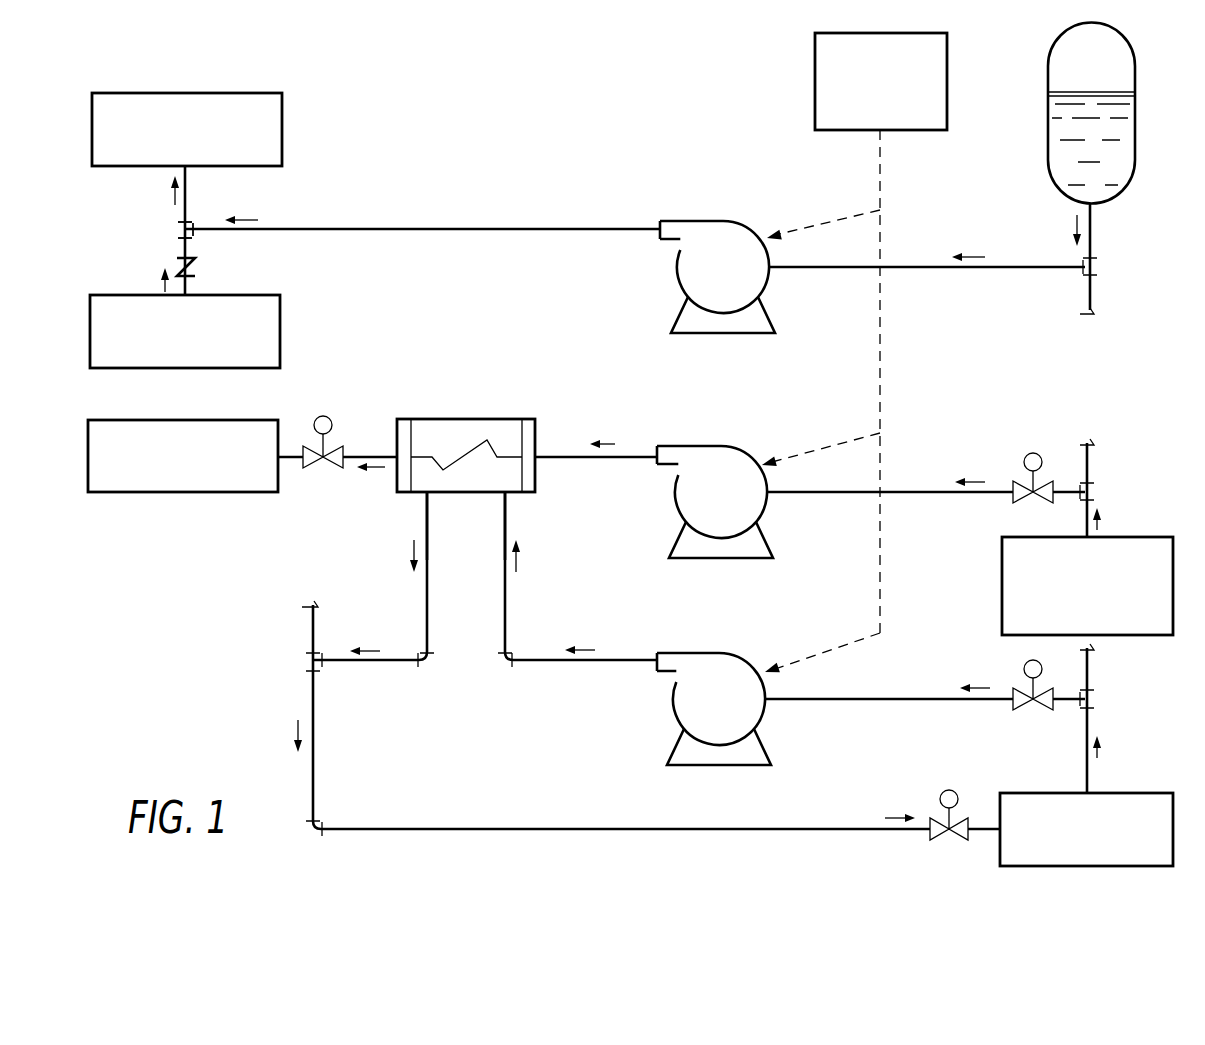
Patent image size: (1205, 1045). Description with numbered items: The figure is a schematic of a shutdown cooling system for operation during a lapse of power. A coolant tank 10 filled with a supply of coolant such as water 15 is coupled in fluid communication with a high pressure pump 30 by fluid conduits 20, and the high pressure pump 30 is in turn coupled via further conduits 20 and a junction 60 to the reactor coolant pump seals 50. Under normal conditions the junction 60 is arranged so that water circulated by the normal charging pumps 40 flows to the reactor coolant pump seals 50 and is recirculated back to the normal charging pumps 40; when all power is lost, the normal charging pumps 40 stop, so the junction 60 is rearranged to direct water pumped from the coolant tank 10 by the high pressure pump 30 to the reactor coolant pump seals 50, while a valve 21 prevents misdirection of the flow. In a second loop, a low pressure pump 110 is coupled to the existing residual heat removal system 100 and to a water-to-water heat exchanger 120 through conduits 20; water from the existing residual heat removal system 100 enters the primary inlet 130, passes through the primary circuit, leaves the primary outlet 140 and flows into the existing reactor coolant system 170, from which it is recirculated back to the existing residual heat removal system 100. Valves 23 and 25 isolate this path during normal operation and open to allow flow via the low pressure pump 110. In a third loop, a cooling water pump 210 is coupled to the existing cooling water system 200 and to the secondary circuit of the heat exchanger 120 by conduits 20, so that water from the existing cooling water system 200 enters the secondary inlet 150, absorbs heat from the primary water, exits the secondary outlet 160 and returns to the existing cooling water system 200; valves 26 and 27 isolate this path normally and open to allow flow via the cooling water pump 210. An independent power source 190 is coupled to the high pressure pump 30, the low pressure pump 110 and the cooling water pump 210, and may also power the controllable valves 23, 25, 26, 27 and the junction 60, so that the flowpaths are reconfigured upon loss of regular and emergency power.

The coolant tank 10 is at (1058, 38).
The water 15 is at (1075, 134).
The fluid conduits 20 is at (397, 231).
The valve 21 is at (196, 272).
The valve 23 is at (305, 467).
The valve 25 is at (1015, 501).
The valve 26 is at (1015, 708).
The valve 27 is at (932, 838).
The high pressure pump 30 is at (730, 220).
The normal charging pumps 40 is at (280, 338).
The reactor coolant pump seals 50 is at (282, 138).
The junction 60 is at (175, 230).
The existing residual heat removal system 100 is at (1137, 537).
The low pressure pump 110 is at (735, 446).
The heat exchanger 120 is at (546, 478).
The primary inlet 130 is at (545, 448).
The primary outlet 140 is at (382, 442).
The secondary inlet 150 is at (513, 503).
The secondary outlet 160 is at (417, 498).
The existing reactor coolant system 170 is at (165, 494).
The independent power source 190 is at (815, 105).
The existing cooling water system 200 is at (1137, 793).
The cooling water pump 210 is at (673, 690).